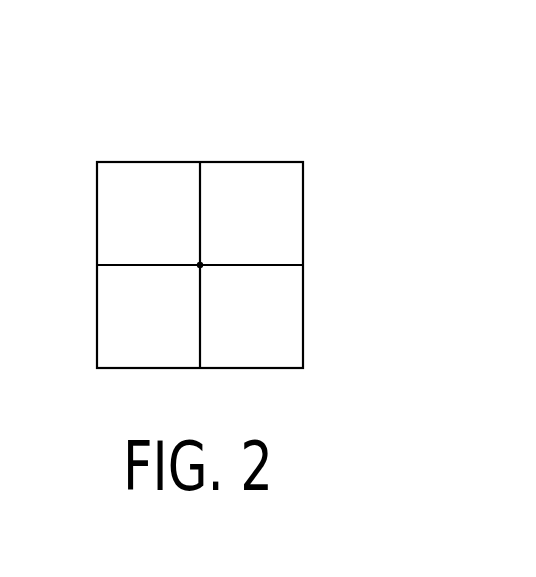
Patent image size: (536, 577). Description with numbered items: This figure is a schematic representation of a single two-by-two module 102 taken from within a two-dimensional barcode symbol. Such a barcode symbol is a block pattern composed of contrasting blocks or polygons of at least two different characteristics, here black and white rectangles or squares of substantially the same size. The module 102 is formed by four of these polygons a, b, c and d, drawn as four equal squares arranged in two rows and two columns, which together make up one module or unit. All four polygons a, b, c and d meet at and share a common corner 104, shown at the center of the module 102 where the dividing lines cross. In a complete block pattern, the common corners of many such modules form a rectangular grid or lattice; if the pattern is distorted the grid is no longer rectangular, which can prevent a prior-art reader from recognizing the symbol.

The module 102 is at (218, 186).
The common corner 104 is at (200, 265).
The polygon a is at (148, 213).
The polygon b is at (251, 213).
The polygon c is at (251, 316).
The polygon d is at (148, 316).